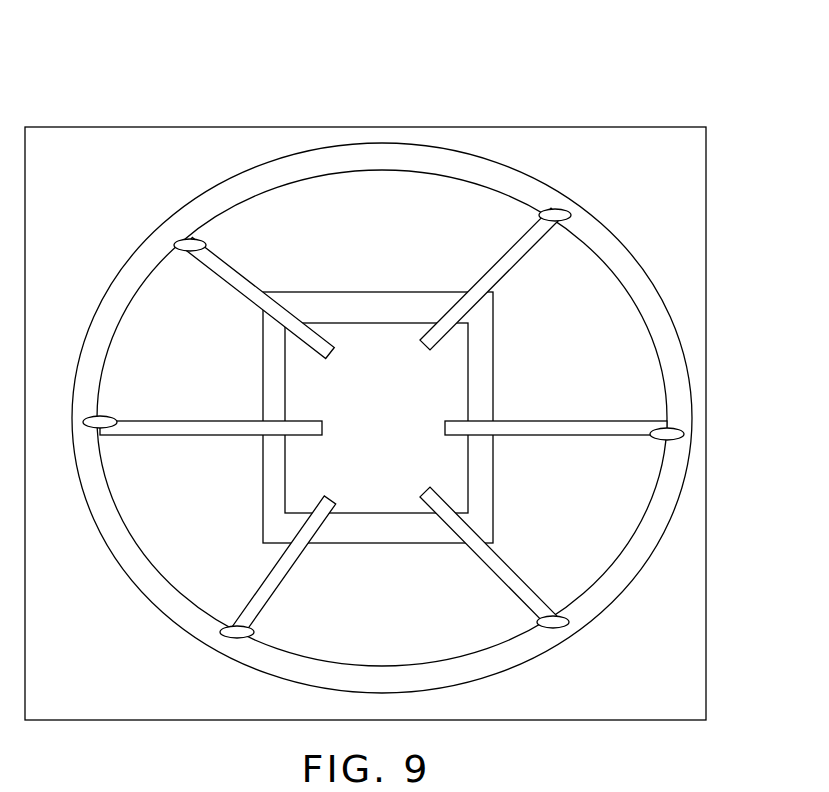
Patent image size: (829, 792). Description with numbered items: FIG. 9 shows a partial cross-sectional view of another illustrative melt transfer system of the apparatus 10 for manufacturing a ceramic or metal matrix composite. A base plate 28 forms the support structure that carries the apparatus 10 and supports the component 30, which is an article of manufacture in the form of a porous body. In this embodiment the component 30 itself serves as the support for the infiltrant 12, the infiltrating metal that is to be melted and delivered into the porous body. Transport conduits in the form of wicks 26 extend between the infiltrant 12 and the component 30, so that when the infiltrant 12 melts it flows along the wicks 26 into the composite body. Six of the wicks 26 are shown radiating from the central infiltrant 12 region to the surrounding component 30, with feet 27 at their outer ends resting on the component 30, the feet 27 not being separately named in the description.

The apparatus 10 is at (398, 366).
The infiltrant 12 is at (365, 323).
The wick 26 is at (217, 277).
The arm feet 27 is at (565, 206).
The base plate 28 is at (706, 645).
The component 30 is at (663, 540).